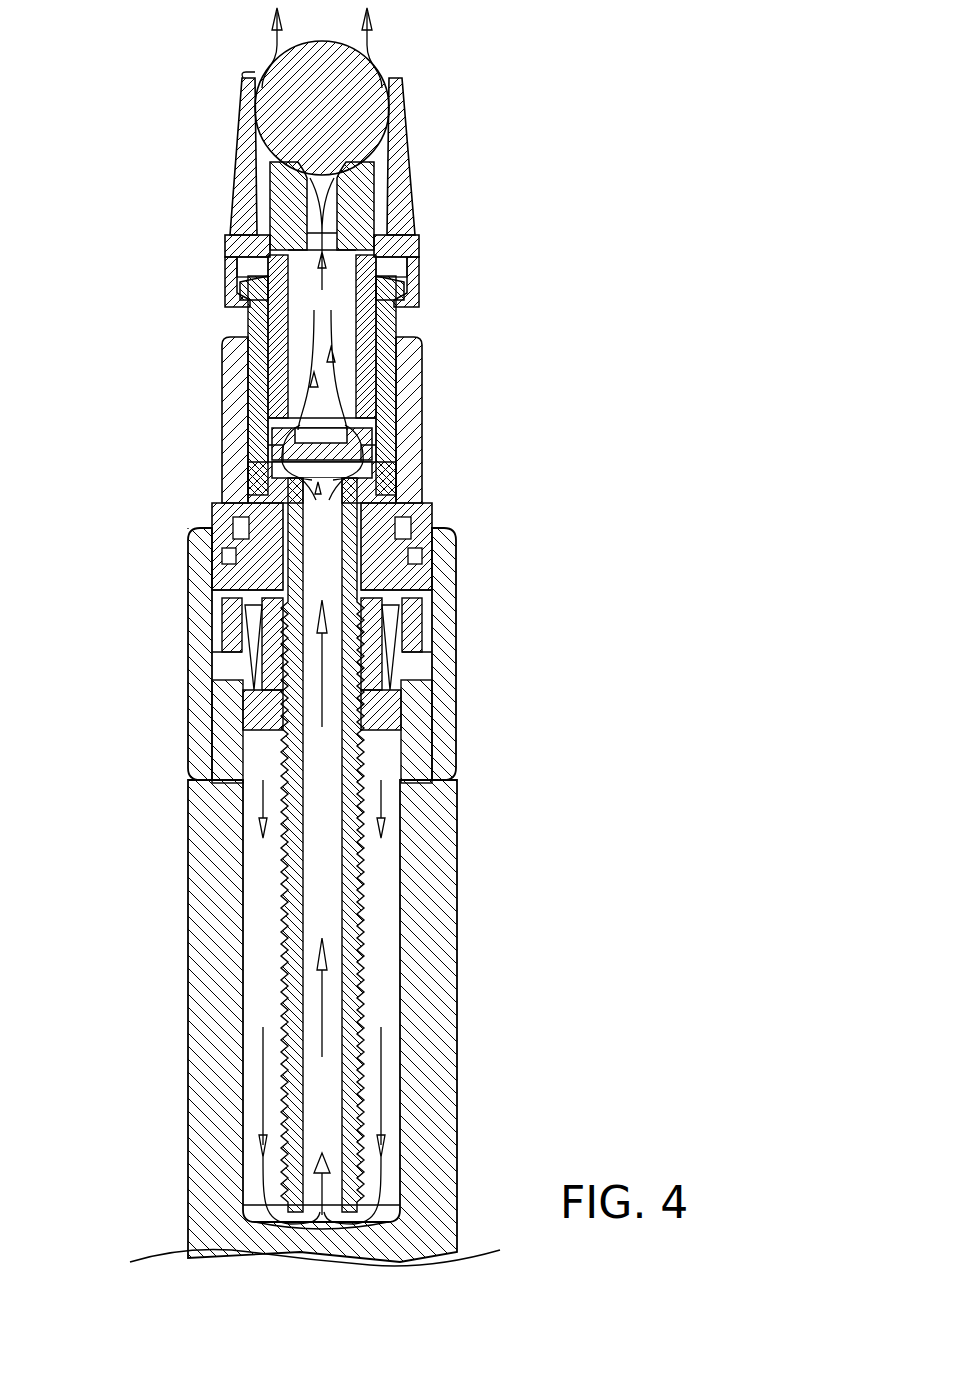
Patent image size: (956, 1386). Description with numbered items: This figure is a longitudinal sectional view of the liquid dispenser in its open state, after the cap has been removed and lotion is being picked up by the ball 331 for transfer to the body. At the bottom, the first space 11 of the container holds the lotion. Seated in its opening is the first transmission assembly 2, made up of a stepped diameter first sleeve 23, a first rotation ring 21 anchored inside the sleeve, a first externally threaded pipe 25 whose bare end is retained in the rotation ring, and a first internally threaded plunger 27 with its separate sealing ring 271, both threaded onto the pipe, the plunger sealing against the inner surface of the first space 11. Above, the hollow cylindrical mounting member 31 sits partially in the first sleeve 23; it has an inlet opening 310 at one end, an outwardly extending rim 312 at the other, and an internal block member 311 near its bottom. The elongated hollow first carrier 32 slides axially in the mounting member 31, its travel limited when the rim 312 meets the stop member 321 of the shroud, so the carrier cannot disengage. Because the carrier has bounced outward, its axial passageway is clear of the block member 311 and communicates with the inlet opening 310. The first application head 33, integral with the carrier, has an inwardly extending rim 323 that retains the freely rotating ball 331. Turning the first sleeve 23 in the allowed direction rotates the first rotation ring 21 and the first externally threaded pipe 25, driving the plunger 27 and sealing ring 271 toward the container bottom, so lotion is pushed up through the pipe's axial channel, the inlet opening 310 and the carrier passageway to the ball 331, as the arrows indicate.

The first transmission assembly 2 is at (483, 564).
The first space 11 is at (385, 920).
The first rotation ring 21 is at (432, 518).
The first sleeve 23 is at (212, 695).
The first externally threaded pipe 25 is at (362, 858).
The first internally threaded plunger 27 is at (397, 668).
The sealing ring 271 is at (455, 727).
The mounting member 31 is at (380, 340).
The inlet opening 310 is at (317, 457).
The block member 311 is at (222, 492).
The rim 312 is at (247, 285).
The first carrier 32 is at (400, 237).
The stop member 321 is at (235, 308).
The rim 323 is at (243, 87).
The first application head 33 is at (243, 185).
The ball 331 is at (347, 115).